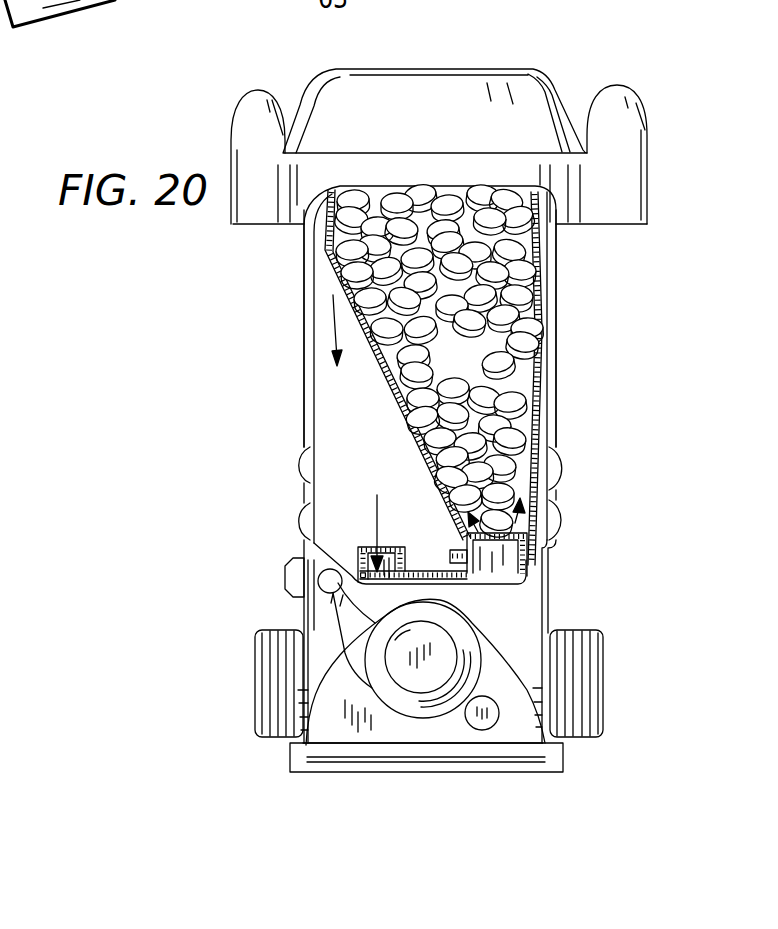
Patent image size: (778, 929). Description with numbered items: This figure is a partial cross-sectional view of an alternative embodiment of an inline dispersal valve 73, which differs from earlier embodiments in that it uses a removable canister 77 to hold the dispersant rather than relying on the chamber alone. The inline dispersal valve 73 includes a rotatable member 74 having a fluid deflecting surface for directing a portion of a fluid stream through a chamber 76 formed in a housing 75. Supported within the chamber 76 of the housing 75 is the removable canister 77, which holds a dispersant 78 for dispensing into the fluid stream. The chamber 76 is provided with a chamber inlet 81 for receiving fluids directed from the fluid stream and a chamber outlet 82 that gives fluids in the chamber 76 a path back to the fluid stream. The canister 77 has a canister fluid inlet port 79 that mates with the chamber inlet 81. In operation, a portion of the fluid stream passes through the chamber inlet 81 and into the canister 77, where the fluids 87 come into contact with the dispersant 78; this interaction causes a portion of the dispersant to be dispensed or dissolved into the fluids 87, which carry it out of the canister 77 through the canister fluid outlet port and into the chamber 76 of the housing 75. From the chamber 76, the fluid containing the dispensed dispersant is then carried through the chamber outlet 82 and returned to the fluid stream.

The inline dispersal valve 73 is at (554, 60).
The rotatable member 74 is at (420, 668).
The housing 75 is at (304, 374).
The chamber 76 is at (378, 467).
The removable canister 77 is at (543, 325).
The dispersant 78 is at (476, 369).
The canister fluid inlet port 79 is at (551, 541).
The chamber inlet 81 is at (527, 574).
The chamber outlet 82 is at (358, 565).
The fluids 87 is at (377, 512).